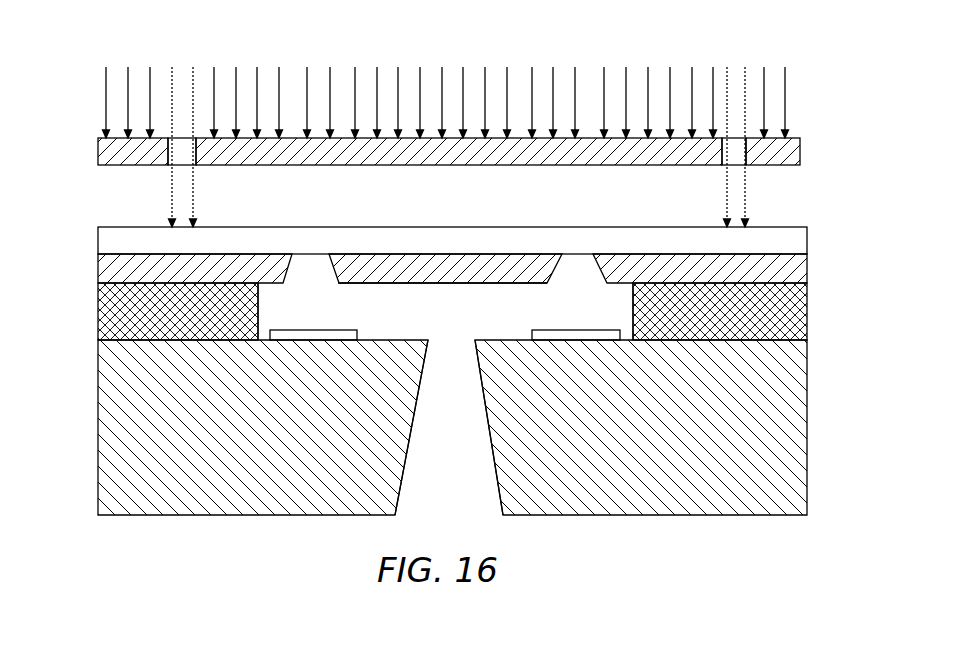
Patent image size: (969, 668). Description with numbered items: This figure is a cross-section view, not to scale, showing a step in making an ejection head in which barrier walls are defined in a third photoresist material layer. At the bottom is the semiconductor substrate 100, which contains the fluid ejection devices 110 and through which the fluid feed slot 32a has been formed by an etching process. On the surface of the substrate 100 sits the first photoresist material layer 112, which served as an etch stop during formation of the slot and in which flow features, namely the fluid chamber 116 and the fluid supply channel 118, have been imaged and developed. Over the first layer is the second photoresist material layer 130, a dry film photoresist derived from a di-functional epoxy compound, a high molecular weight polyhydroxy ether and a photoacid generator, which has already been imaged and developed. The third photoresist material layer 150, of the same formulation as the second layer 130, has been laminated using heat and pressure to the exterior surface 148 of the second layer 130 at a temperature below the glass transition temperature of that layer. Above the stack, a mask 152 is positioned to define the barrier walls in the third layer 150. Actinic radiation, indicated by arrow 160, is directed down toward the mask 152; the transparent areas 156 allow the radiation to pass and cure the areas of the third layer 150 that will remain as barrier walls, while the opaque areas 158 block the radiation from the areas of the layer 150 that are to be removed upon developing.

The semiconductor substrate 100 is at (158, 463).
The fluid feed slot 32a is at (437, 416).
The fluid ejection devices 110 is at (303, 338).
The first photoresist material layer 112 is at (793, 304).
The fluid chamber 116 is at (285, 316).
The fluid supply channel 118 is at (423, 315).
The second photoresist material layer 130 is at (798, 267).
The exterior surface 148 is at (261, 240).
The third photoresist material layer 150 is at (793, 240).
The mask 152 is at (787, 148).
The transparent areas 156 is at (460, 115).
The opaque areas 158 is at (517, 69).
The actinic radiation 160 is at (96, 93).